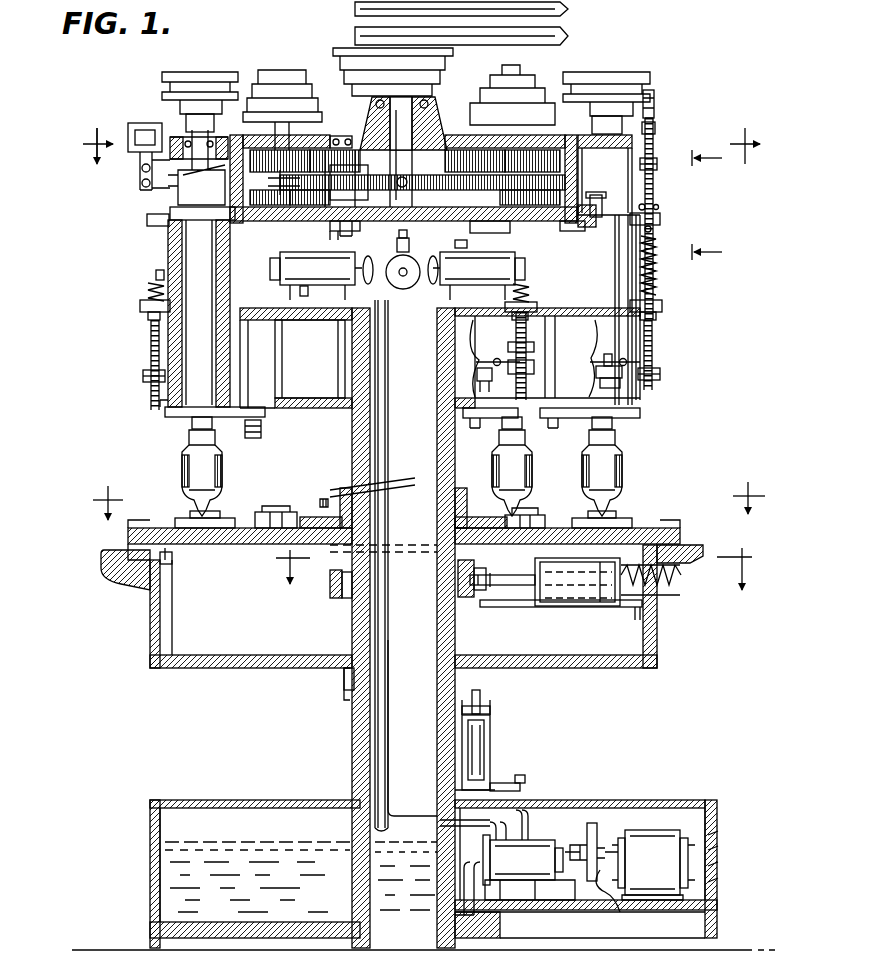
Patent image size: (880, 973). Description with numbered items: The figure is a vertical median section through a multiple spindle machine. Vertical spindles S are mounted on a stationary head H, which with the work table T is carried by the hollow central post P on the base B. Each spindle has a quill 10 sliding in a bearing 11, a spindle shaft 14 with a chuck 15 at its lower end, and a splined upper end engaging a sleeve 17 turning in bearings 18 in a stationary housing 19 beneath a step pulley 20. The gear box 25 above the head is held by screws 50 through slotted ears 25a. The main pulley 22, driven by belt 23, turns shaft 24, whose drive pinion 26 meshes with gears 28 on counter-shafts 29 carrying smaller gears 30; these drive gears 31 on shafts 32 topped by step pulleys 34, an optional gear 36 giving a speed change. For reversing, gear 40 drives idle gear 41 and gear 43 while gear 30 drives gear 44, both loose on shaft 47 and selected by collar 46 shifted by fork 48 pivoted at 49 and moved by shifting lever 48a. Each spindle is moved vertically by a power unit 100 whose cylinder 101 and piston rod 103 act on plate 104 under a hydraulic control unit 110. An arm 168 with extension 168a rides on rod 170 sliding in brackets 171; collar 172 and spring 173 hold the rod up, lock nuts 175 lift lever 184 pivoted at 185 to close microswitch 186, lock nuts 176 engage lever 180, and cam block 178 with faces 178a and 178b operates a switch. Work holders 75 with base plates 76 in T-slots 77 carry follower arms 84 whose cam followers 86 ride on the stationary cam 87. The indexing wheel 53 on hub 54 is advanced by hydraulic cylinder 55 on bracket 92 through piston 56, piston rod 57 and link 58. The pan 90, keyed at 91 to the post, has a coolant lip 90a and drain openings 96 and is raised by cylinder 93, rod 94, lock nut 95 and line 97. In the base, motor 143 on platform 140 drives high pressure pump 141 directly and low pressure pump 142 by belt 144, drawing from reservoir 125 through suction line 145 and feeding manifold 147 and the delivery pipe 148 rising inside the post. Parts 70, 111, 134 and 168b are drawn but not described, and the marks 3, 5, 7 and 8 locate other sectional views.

The quill 10 is at (180, 408).
The bearing 11 is at (165, 405).
The spindle shaft 14 is at (612, 425).
The chuck 15 is at (532, 460).
The sleeve 17 is at (200, 170).
The bearings 18 is at (175, 135).
The stationary housing 19 is at (632, 158).
The pulley 20 is at (603, 72).
The pulley 22 is at (333, 50).
The belt 23 is at (568, 12).
The shaft 24 is at (412, 155).
The gear box 25 is at (378, 135).
The slotted ears 25a is at (606, 218).
The drive pinion 26 is at (368, 181).
The gears 28 is at (440, 200).
The counter-shaft 29 is at (352, 128).
The gear 30 is at (442, 170).
The gears 31 is at (508, 158).
The shafts 32 is at (520, 157).
The step pulley 34 is at (528, 80).
The second smaller gear 36 is at (530, 205).
The extra driving gear 40 is at (348, 236).
The idle gear 41 is at (328, 232).
The gear 43 is at (301, 204).
The gear 44 is at (323, 171).
The collar 46 is at (280, 153).
The shaft 47 is at (296, 184).
The fork 48 is at (266, 204).
The shifting lever 48a is at (140, 183).
The pivot 49 is at (183, 191).
The screws 50 is at (594, 195).
The indexing wheel 53 is at (338, 592).
The hub 54 is at (348, 596).
The hydraulic cylinder 55 is at (575, 600).
The piston 56 is at (600, 605).
The piston rod 57 is at (516, 590).
The link 58 is at (505, 565).
The spring 70 is at (675, 585).
The work holder 75 is at (612, 502).
The base plate 76 is at (632, 524).
The T-slots 77 is at (688, 532).
The follower arm 84 is at (540, 512).
The cam follower 86 is at (505, 520).
The stationary cam 87 is at (310, 515).
The pan 90 is at (160, 623).
The lip 90a is at (112, 570).
The key 91 is at (344, 680).
The bracket 92 is at (620, 608).
The hydraulic cylinder 93 is at (490, 750).
The rod 94 is at (484, 730).
The lock nut 95 is at (480, 710).
The drain openings 96 is at (172, 562).
The line 97 is at (508, 788).
The power unit 100 is at (277, 357).
The double acting cylinder 101 is at (290, 370).
The piston rod 103 is at (261, 432).
The plate 104 is at (580, 408).
The hydraulic control unit 110 is at (408, 300).
The motor mount 111 is at (465, 246).
The reservoir 125 is at (272, 825).
The stop 134 is at (156, 272).
The platform 140 is at (568, 900).
The high pressure pump 141 is at (530, 880).
The low pressure pump 142 is at (580, 825).
The motor 143 is at (653, 865).
The belt 144 is at (629, 902).
The suction line 145 is at (437, 881).
The manifold 147 is at (520, 825).
The common delivery pipe 148 is at (388, 508).
The arm 168 is at (660, 345).
The extension 168a is at (660, 316).
The housing 168b is at (547, 311).
The rod 170 is at (657, 330).
The fixed brackets 171 is at (662, 305).
The collar 172 is at (652, 229).
The compression spring 173 is at (657, 285).
The lock nuts 175 is at (660, 374).
The lock nuts 176 is at (668, 172).
The cam block 178 is at (655, 100).
The upper face section 178a is at (655, 110).
The lower face section 178b is at (656, 132).
The lever 180 is at (658, 207).
The lever 184 is at (594, 360).
The pivot 185 is at (623, 340).
The microswitch 186 is at (616, 388).
The base B is at (150, 905).
The head H is at (135, 273).
The post P is at (350, 714).
The spindle S is at (632, 428).
The work table T is at (126, 538).
The section line 3- 3 is at (707, 208).
The section line 5- 5 is at (421, 135).
The section line 7- 7 is at (514, 578).
The section line 8- 8 is at (429, 492).